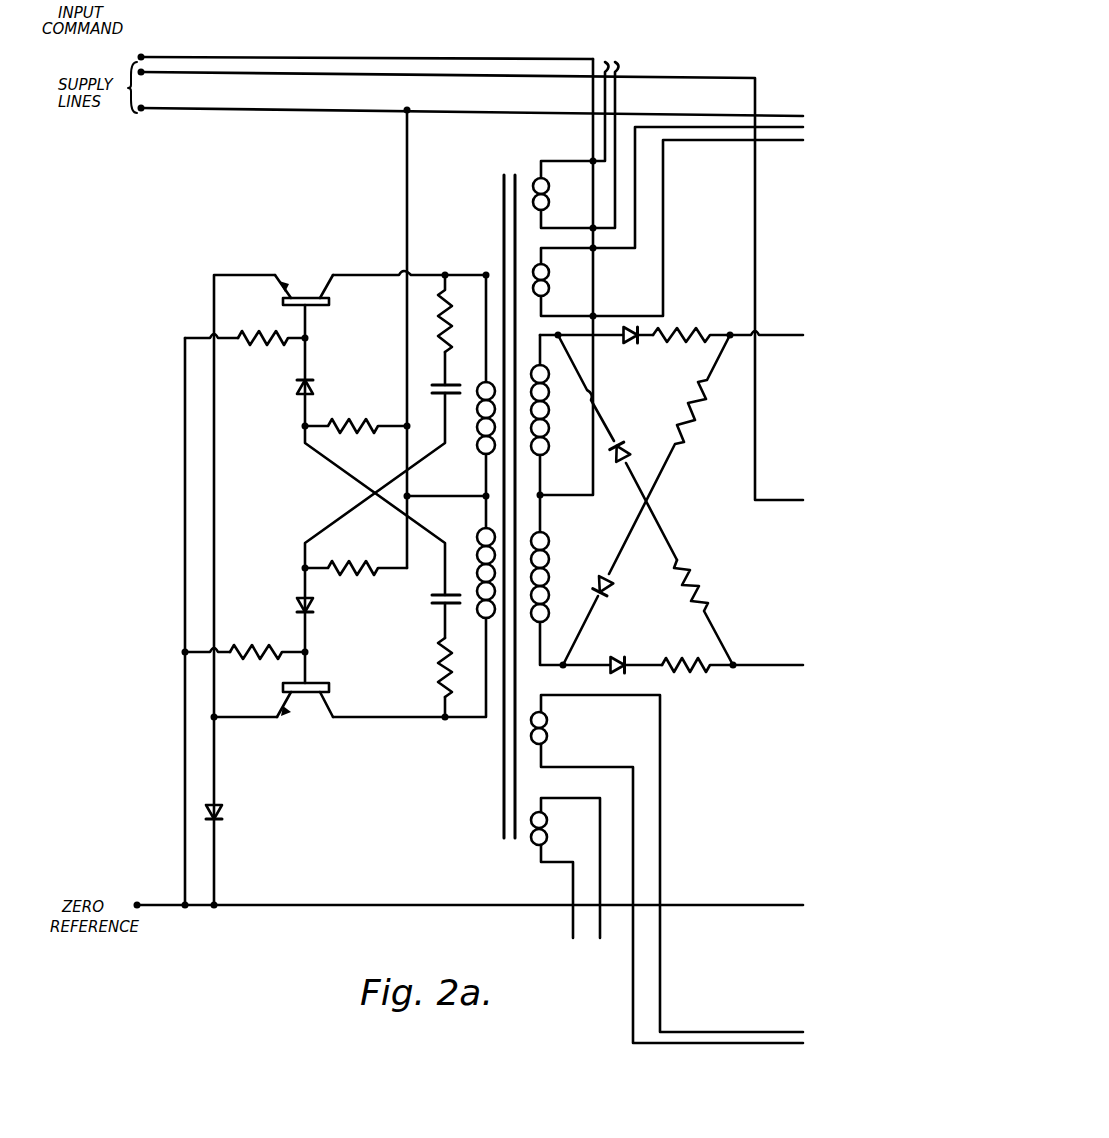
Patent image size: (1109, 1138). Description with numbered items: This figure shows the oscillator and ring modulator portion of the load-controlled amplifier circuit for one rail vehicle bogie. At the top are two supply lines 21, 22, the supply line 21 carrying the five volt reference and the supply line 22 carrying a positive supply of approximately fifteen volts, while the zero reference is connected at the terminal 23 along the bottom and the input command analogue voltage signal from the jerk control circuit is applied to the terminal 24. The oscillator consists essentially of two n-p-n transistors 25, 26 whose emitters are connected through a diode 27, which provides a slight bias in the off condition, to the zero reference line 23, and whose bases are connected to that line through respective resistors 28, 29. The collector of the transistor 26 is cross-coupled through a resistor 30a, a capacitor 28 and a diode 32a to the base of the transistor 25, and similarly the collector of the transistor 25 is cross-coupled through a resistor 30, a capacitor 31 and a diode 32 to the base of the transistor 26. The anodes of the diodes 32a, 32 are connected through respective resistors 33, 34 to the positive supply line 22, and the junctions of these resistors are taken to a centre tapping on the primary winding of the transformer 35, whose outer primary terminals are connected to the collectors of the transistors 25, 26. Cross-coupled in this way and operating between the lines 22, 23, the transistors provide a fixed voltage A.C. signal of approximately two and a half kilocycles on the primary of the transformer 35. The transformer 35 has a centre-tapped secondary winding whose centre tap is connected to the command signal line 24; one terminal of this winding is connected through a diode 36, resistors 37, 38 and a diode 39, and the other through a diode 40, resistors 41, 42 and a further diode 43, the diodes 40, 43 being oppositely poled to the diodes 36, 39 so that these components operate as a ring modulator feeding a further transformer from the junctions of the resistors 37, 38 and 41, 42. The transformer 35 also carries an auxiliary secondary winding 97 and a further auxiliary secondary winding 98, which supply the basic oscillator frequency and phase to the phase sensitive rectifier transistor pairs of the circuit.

The supply line 21 is at (148, 72).
The supply line 22 is at (147, 101).
The zero reference terminal 23 is at (143, 896).
The input command terminal 24 is at (126, 27).
The transistor 25 is at (303, 285).
The transistor 26 is at (306, 700).
The diode 27 is at (225, 813).
The resistor 28 is at (262, 318).
The resistor 29 is at (262, 631).
The resistor 30 is at (434, 333).
The resistor 30a is at (430, 676).
The capacitor 31 is at (434, 373).
The diode 32 is at (316, 606).
The diode 32a is at (316, 388).
The resistor 33 is at (366, 400).
The resistor 34 is at (366, 543).
The transformer 35 is at (490, 204).
The diode 36 is at (630, 348).
The resistor 37 is at (683, 345).
The resistor 38 is at (700, 413).
The diode 39 is at (593, 570).
The diode 40 is at (645, 430).
The resistor 41 is at (695, 572).
The resistor 42 is at (680, 659).
The diode 43 is at (616, 659).
The auxiliary secondary winding 97 is at (550, 195).
The auxiliary secondary winding 98 is at (548, 731).